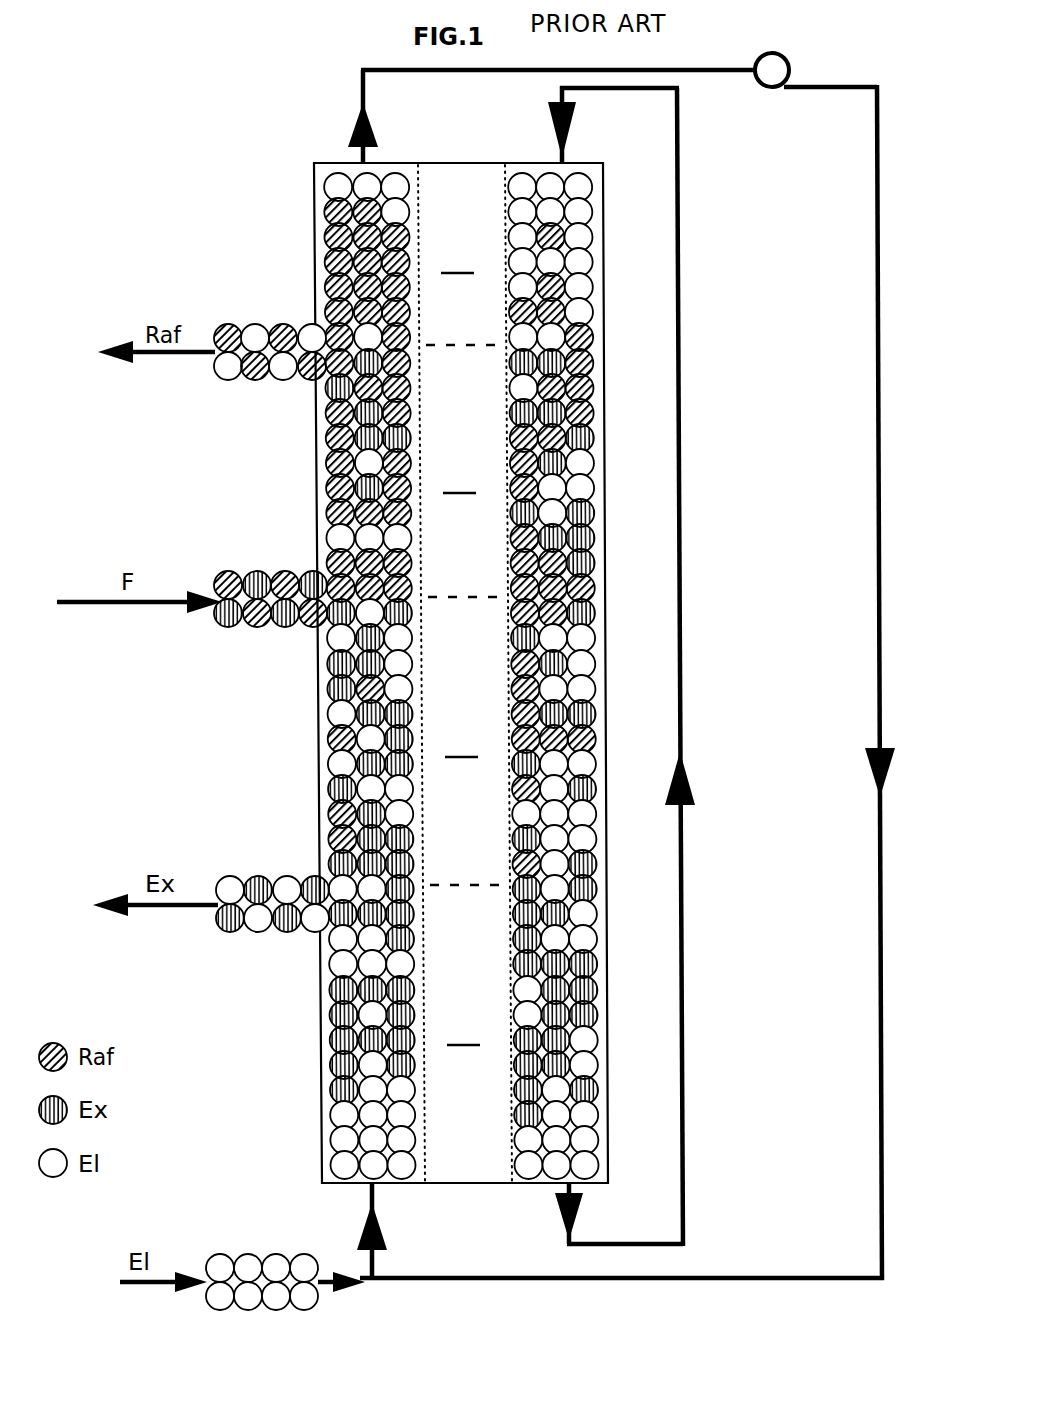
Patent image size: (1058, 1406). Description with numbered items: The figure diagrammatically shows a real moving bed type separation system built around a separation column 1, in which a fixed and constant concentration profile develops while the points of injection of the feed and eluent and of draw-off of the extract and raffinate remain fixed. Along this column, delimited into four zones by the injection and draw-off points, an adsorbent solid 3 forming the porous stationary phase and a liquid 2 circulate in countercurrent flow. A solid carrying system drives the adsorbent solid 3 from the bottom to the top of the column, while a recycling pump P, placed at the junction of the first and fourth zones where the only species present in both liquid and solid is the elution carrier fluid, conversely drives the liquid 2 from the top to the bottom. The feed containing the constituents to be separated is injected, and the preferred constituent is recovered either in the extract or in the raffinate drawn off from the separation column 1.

The separation column 1 is at (268, 198).
The liquid 2 is at (572, 180).
The adsorbent solid 3 is at (441, 72).
The recycling pump P is at (792, 58).